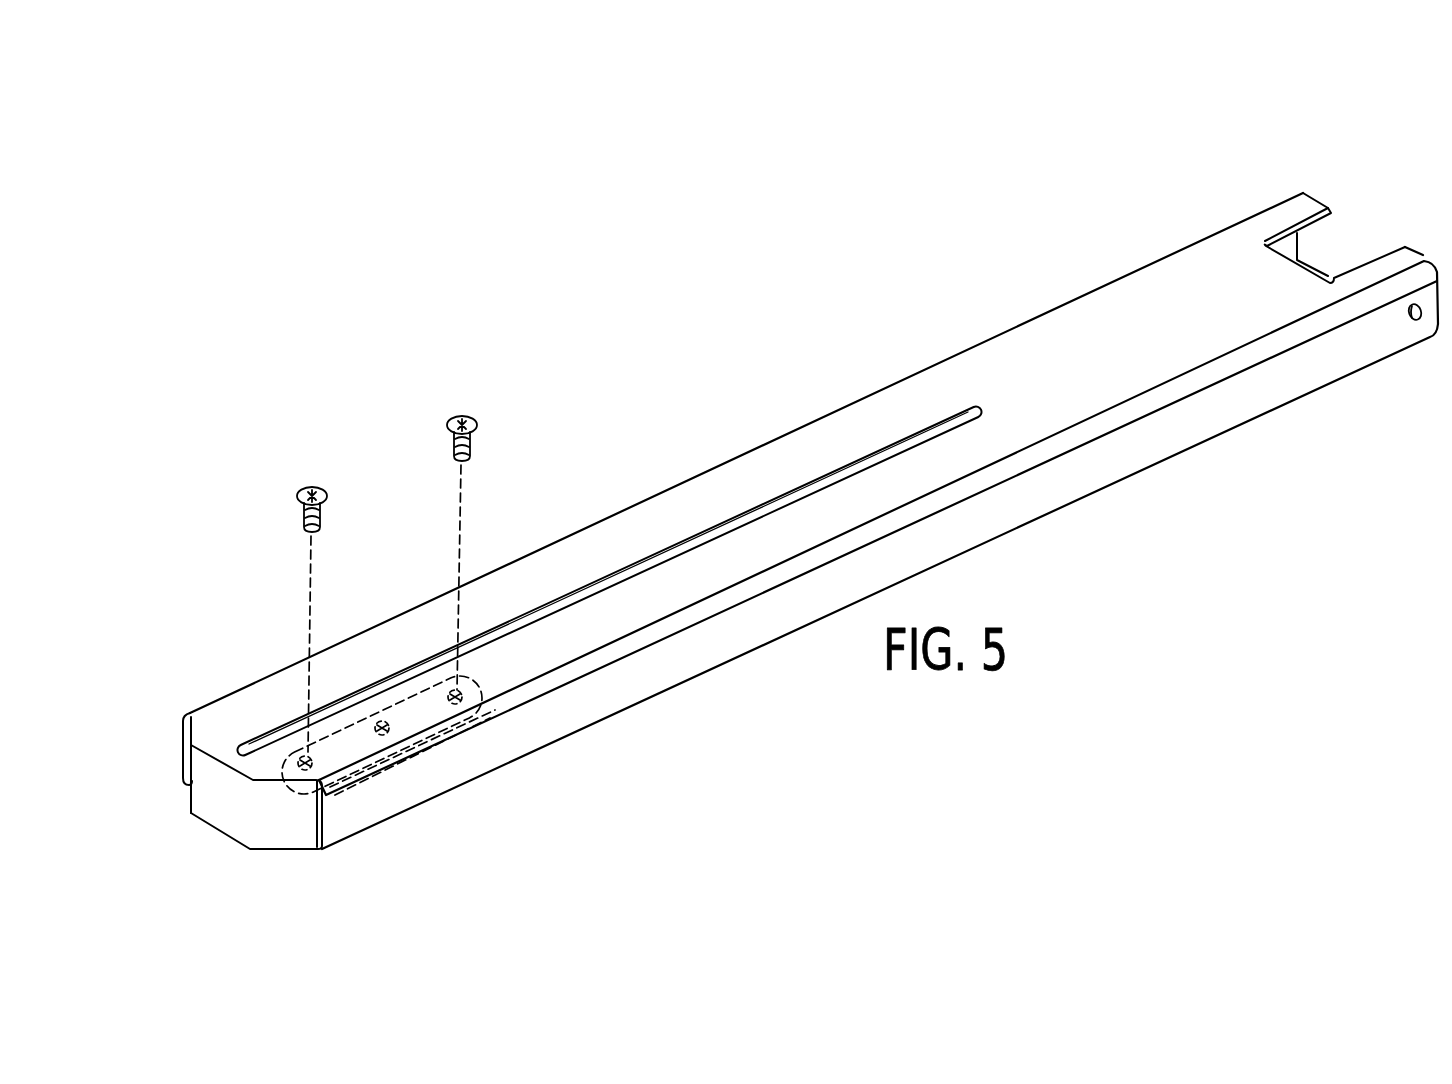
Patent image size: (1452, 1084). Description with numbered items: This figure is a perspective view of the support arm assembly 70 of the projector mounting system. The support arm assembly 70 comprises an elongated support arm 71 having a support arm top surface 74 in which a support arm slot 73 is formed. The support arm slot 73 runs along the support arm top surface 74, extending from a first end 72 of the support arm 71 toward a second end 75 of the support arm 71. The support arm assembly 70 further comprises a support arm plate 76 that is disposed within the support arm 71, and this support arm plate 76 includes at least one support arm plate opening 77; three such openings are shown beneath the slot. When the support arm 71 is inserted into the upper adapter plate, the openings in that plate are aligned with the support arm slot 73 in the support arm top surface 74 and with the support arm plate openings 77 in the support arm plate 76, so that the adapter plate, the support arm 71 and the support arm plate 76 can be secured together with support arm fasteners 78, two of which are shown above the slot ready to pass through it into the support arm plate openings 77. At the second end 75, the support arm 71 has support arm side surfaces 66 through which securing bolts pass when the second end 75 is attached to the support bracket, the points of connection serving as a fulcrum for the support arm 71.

The support arm assembly 70 is at (610, 340).
The support arm 71 is at (1150, 392).
The first end 72 is at (218, 723).
The support arm slot 73 is at (800, 493).
The support arm top surface 74 is at (1092, 318).
The second end 75 is at (1323, 203).
The support arm plate 76 is at (415, 735).
The support arm plate opening 77 is at (455, 695).
The support arm fasteners 78 is at (455, 417).
The support arm side surfaces 66 is at (1424, 322).